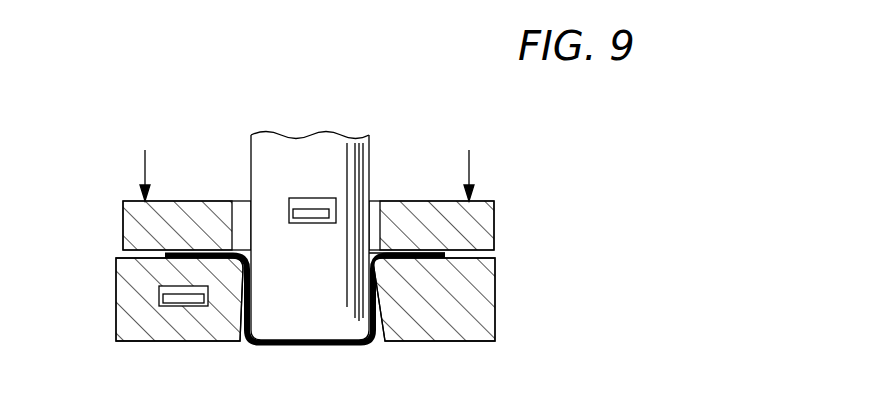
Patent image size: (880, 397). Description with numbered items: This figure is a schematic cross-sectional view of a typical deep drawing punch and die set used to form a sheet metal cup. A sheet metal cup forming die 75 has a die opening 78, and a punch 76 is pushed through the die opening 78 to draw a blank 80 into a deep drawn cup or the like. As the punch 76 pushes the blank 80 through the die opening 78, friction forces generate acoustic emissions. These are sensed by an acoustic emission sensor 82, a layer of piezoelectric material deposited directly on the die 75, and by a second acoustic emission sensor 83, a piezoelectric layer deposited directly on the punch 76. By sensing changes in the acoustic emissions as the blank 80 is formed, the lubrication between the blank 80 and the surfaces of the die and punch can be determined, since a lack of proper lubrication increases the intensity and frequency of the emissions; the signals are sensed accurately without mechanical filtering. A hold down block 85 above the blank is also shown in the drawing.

The sheet metal cup forming die 75 is at (478, 328).
The punch 76 is at (366, 160).
The die opening 78 is at (243, 336).
The blank 80 is at (441, 258).
The acoustic emission sensor 82 is at (167, 297).
The second acoustic emission sensor 83 is at (289, 198).
The upper mold block 85 is at (494, 218).